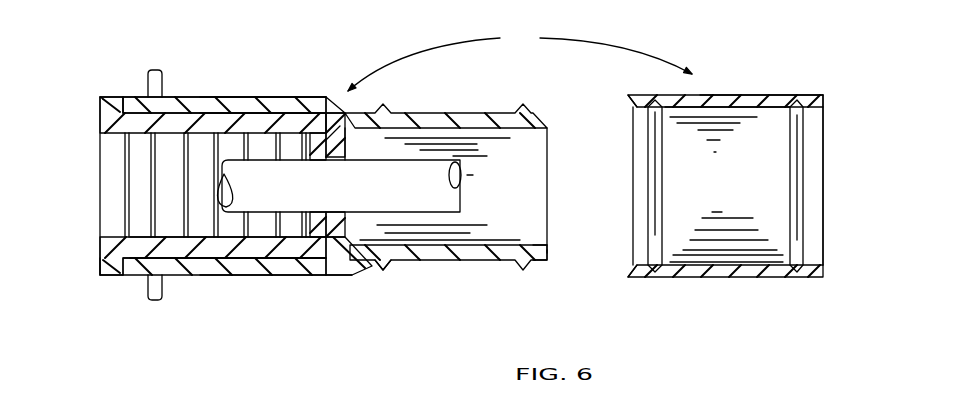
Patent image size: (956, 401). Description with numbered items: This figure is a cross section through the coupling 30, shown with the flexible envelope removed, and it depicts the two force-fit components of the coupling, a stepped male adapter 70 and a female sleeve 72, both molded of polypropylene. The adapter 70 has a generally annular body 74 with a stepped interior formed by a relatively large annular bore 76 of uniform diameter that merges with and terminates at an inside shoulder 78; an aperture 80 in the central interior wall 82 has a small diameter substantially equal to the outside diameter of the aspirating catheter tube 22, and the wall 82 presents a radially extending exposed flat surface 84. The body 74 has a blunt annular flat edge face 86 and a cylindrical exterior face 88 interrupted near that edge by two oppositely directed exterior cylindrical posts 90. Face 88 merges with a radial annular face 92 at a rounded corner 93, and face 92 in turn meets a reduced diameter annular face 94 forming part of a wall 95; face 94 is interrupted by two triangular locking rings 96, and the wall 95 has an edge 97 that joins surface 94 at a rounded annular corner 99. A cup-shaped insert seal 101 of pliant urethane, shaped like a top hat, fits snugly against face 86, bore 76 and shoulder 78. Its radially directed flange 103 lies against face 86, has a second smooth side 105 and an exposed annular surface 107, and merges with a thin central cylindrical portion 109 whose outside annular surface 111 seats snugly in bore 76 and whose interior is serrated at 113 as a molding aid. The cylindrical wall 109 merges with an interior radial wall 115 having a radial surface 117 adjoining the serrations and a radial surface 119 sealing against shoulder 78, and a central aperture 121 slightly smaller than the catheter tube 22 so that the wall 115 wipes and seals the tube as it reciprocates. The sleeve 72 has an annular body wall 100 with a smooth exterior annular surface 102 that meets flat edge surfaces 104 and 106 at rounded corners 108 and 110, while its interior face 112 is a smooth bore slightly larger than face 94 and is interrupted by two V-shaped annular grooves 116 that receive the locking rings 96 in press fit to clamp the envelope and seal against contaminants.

The aspirating catheter tube 22 is at (420, 188).
The coupling 30 is at (520, 61).
The stepped adapter 70 is at (260, 90).
The sleeve 72 is at (698, 92).
The annular body 74 is at (287, 103).
The annular bore 76 is at (305, 113).
The inside shoulder 78 is at (345, 98).
The aperture 80 is at (328, 147).
The central interior wall 82 is at (327, 162).
The flat surface 84 is at (349, 213).
The annular flat edge face 86 is at (123, 98).
The cylindrical exterior face 88 is at (217, 96).
The exterior cylindrical posts 90 is at (158, 71).
The annular face 92 is at (347, 267).
The annular rounded corner 93 is at (347, 275).
The reduced diameter annular face 94 is at (433, 110).
The wall 95 is at (533, 118).
The locking rings 96 is at (398, 268).
The edge 97 is at (548, 248).
The rounded annular corner 99 is at (547, 262).
The annular body wall 100 is at (780, 98).
The cup-shaped insert seal 101 is at (97, 122).
The exterior annular surface 102 is at (737, 97).
The radially directed flange 103 is at (100, 108).
The flat edge surface 104 is at (640, 276).
The second smooth side 105 is at (100, 243).
The flat edge surface 106 is at (823, 100).
The exposed annular surface 107 is at (100, 275).
The rounded annular corner 108 is at (635, 97).
The central cylindrical portion 109 is at (185, 248).
The rounded annular corner 110 is at (823, 276).
The outside annular surface 111 is at (250, 258).
The interior face 112 is at (714, 98).
The serrations 113 is at (216, 137).
The interior radially directed wall 115 is at (303, 164).
The V-shaped annular grooves 116 is at (797, 163).
The radial surface 117 is at (303, 220).
The radial surface 119 is at (380, 268).
The central aperture 121 is at (315, 208).